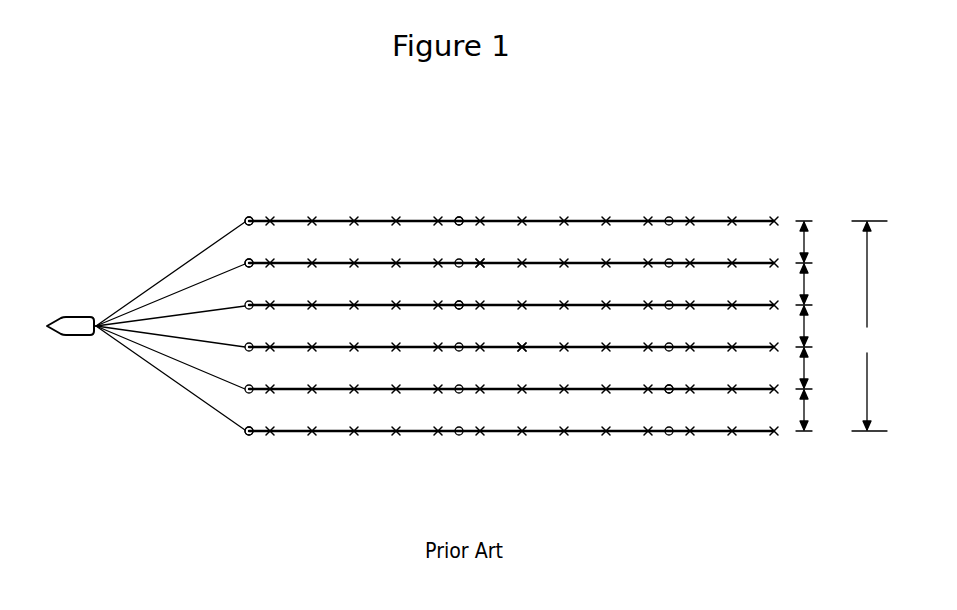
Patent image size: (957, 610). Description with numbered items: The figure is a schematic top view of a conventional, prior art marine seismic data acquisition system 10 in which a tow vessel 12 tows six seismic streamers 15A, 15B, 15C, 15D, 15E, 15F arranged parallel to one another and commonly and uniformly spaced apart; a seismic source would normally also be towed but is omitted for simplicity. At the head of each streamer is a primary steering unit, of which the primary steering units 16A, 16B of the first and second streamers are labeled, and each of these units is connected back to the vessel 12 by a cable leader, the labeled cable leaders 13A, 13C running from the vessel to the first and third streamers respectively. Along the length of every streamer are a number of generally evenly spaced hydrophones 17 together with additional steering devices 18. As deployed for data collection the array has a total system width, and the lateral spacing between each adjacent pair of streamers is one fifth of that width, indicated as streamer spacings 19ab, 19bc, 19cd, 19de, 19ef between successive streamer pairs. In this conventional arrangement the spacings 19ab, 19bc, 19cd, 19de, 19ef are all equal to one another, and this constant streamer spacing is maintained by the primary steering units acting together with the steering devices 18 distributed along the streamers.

The marine seismic data acquisition system 10 is at (623, 163).
The tow vessel 12 is at (77, 323).
The cable leader 13A is at (188, 262).
The cable leader 13C is at (187, 313).
The seismic streamer 15A is at (328, 221).
The seismic streamer 15B is at (328, 263).
The seismic streamer 15C is at (331, 305).
The seismic streamer 15D is at (333, 347).
The seismic streamer 15E is at (333, 389).
The seismic streamer 15F is at (333, 431).
The primary steering unit 16A is at (250, 216).
The primary steering unit 16B is at (248, 258).
The hydrophone 17 is at (479, 263).
The steering device 18 is at (459, 217).
The streamer spacing 19ab is at (806, 252).
The streamer spacing 19bc is at (806, 292).
The streamer spacing 19cd is at (806, 330).
The streamer spacing 19de is at (806, 380).
The streamer spacing 19ef is at (806, 422).